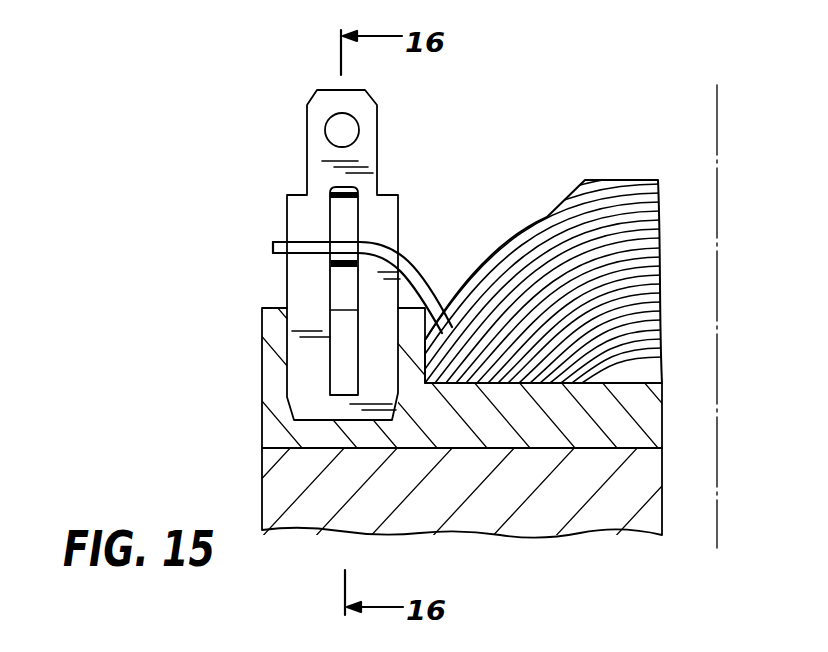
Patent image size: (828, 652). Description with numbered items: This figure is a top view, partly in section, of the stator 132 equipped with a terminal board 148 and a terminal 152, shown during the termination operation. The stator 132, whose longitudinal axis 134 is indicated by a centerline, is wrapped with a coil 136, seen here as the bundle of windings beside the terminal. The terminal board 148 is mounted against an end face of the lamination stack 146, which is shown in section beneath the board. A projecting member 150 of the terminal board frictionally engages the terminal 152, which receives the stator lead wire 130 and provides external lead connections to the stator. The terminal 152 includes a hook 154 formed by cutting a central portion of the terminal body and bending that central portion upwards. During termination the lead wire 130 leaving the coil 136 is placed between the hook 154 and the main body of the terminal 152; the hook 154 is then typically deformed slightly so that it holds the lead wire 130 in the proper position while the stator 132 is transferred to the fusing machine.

The stator lead wire 130 is at (273, 254).
The stator 132 is at (213, 144).
The longitudinal axis 134 is at (717, 150).
The coil 136 is at (517, 253).
The lamination stack 146 is at (593, 523).
The terminal board 148 is at (652, 422).
The projecting member 150 is at (272, 392).
The terminal 152 is at (366, 161).
The hook 154 is at (345, 226).